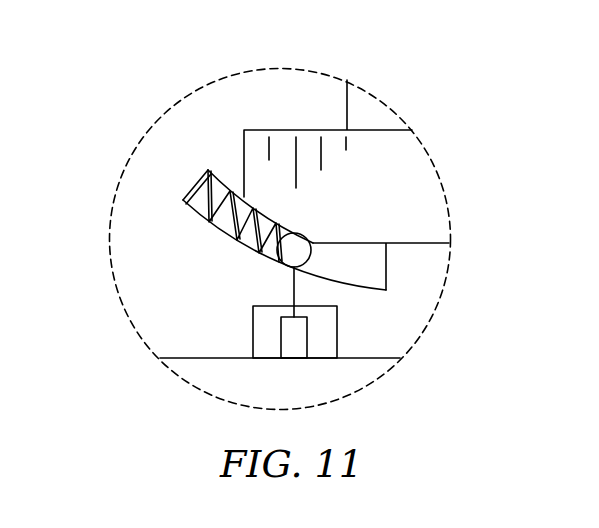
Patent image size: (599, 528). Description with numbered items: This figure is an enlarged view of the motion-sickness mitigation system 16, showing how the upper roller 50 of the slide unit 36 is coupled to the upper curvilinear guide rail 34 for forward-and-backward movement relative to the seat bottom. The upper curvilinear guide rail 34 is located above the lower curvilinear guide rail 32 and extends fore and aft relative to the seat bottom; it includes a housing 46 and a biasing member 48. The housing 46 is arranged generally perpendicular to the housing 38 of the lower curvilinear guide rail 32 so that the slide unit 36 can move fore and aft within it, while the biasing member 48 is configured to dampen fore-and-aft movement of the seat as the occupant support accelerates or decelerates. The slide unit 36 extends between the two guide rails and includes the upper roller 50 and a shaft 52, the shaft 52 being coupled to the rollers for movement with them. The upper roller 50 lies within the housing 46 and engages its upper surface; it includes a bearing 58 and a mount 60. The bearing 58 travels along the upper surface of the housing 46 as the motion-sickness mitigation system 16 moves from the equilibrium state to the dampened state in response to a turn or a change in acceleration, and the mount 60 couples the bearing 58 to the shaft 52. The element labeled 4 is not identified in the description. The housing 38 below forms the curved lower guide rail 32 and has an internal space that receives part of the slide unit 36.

The motion-sickness mitigation system 16 is at (445, 98).
The upper curvilinear guide rail 34 is at (180, 170).
The slide unit 36 is at (192, 296).
The biasing member 48 is at (180, 212).
The housing 46 is at (210, 226).
The upper roller 50 is at (270, 258).
The bearing 58 is at (312, 243).
The mount 60 is at (314, 269).
The shaft 52 is at (293, 298).
The lower curvilinear guide rail 32 is at (355, 323).
The support block 4 is at (280, 338).
The housing 38 is at (253, 350).